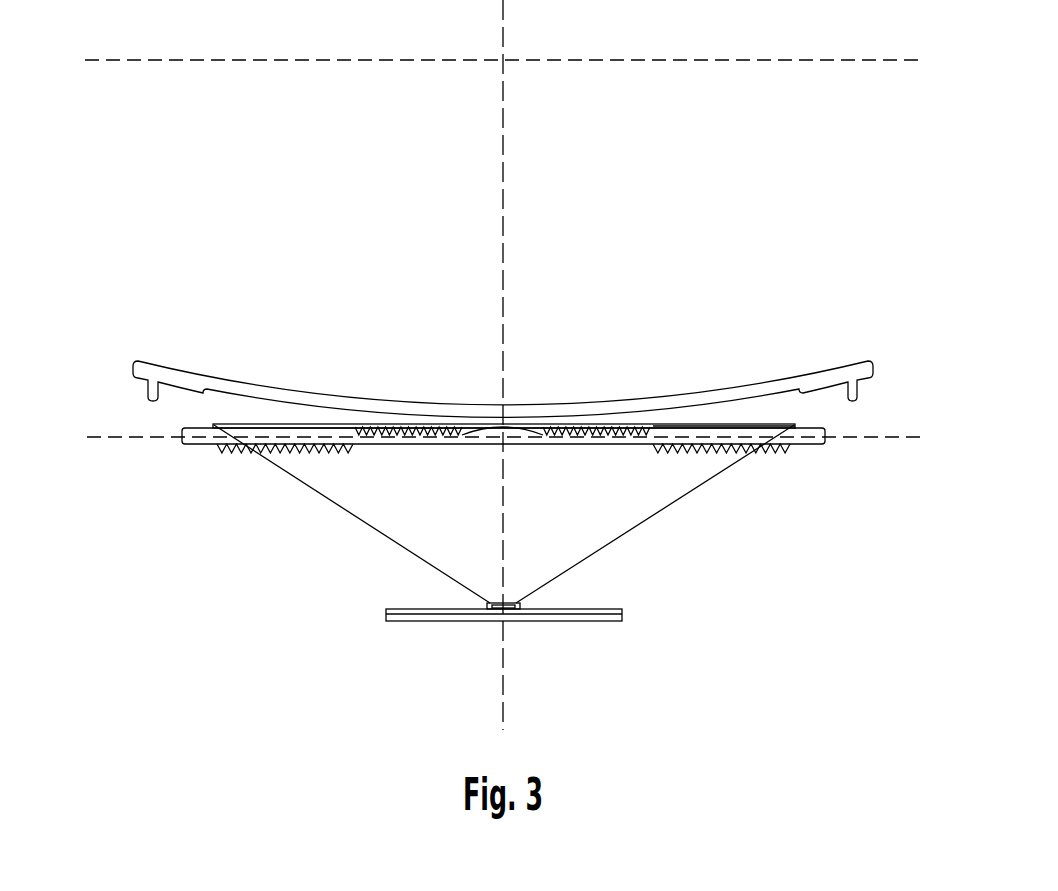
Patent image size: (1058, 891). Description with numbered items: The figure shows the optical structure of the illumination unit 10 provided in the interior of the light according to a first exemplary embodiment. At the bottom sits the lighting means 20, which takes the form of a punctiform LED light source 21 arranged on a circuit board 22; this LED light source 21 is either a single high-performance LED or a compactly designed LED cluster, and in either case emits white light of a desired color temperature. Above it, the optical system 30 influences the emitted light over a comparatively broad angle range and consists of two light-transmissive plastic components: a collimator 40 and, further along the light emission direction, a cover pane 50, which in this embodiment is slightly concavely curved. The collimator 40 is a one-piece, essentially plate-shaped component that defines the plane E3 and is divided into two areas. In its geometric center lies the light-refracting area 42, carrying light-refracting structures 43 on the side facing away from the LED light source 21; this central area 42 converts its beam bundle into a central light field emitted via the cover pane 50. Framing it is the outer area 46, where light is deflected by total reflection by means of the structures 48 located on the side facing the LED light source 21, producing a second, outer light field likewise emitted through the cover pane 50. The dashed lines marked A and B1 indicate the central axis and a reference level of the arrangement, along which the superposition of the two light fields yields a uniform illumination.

The illumination unit 10 is at (478, 427).
The lighting means 20 is at (522, 610).
The LED light source 21 is at (490, 610).
The circuit board 22 is at (407, 622).
The optical system 30 is at (764, 548).
The collimator 40 is at (192, 445).
The light-refracting area 42 is at (403, 447).
The light-refracting structures 43 is at (369, 425).
The outer area 46 is at (752, 425).
The total-reflection structures 48 is at (722, 455).
The cover pane 50 is at (190, 378).
The optical axis A is at (503, 172).
The reference plane B1 is at (748, 60).
The plane E3 is at (118, 437).